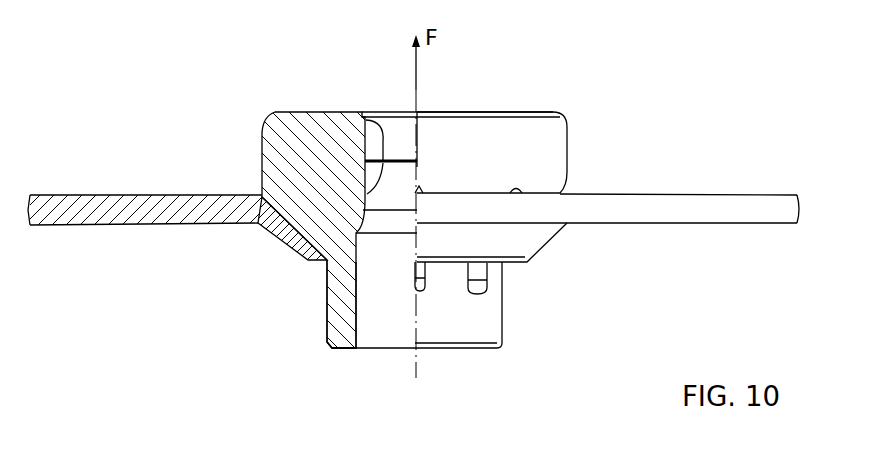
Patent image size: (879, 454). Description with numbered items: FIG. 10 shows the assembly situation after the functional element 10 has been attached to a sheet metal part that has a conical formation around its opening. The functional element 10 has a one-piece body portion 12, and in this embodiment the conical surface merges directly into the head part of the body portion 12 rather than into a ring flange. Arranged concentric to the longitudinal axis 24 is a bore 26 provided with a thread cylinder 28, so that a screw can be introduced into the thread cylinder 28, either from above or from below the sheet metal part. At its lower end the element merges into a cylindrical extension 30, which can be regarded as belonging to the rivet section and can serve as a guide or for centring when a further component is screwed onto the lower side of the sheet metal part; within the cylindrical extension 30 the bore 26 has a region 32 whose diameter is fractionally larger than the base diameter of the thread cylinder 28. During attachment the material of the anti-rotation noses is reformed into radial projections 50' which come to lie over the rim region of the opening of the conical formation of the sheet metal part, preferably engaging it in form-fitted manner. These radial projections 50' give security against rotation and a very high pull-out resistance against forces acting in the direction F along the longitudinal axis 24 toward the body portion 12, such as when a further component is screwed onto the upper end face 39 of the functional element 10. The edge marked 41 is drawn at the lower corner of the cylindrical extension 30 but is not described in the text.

The functional element 10 is at (592, 143).
The body portion 12 is at (263, 155).
The longitudinal axis 24 is at (416, 108).
The bore 26 is at (362, 116).
The thread cylinder 28 is at (381, 120).
The cylindrical extension 30 is at (327, 322).
The region 32 is at (388, 335).
The upper end face 39 is at (520, 113).
The edge chamfer 41 is at (348, 354).
The radial projections 50' is at (275, 244).